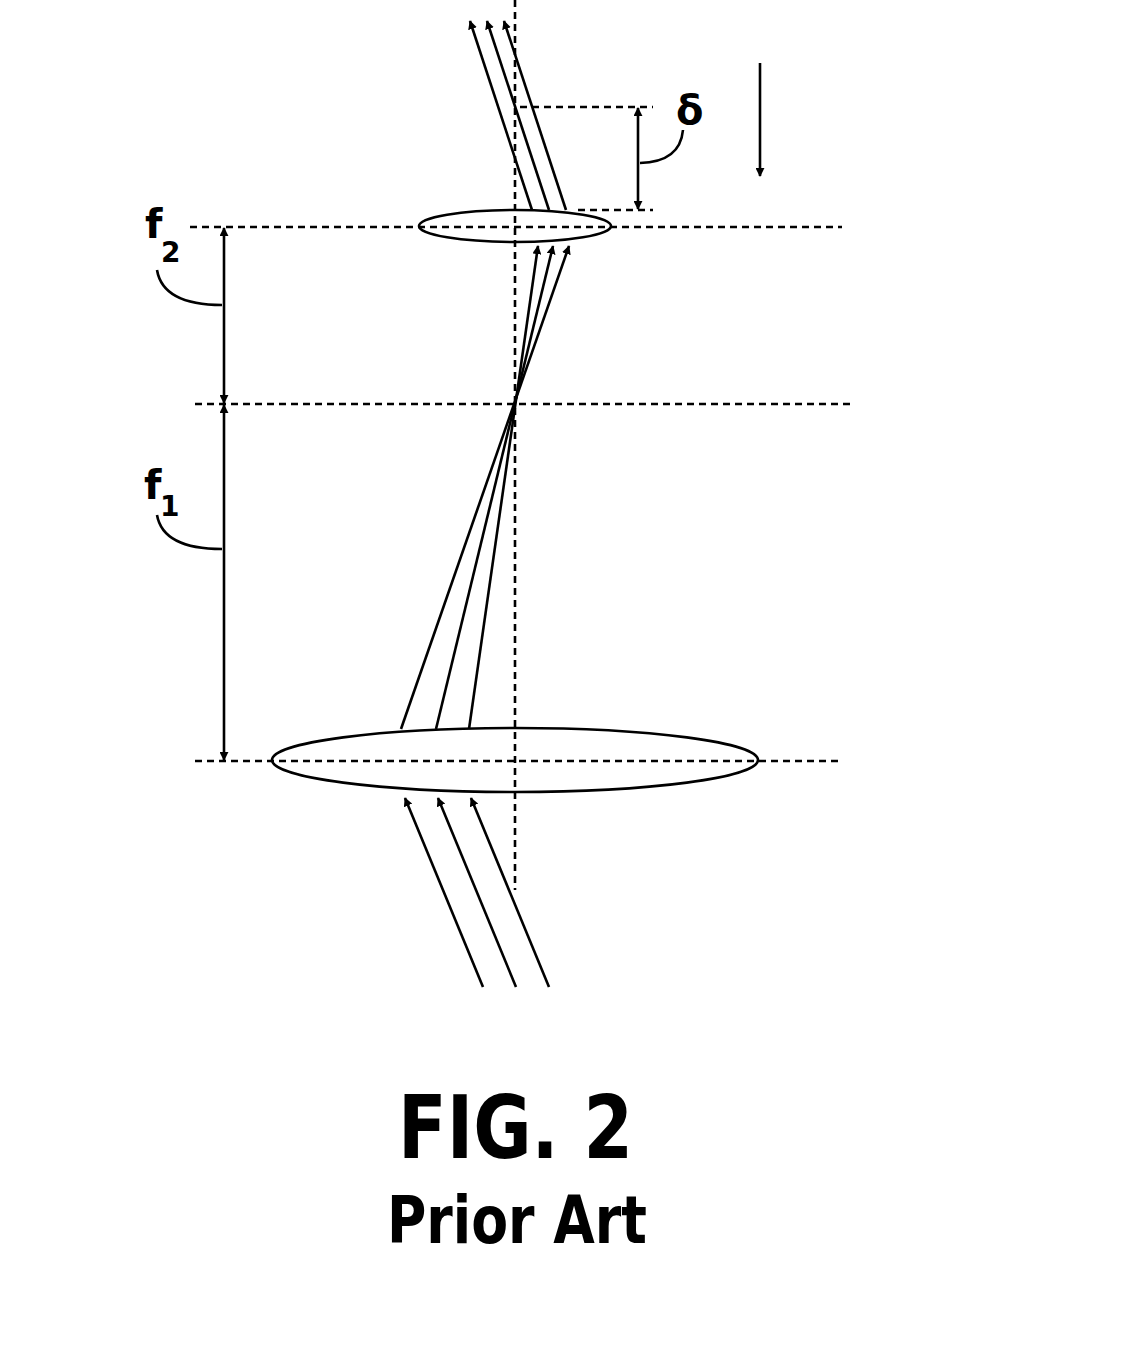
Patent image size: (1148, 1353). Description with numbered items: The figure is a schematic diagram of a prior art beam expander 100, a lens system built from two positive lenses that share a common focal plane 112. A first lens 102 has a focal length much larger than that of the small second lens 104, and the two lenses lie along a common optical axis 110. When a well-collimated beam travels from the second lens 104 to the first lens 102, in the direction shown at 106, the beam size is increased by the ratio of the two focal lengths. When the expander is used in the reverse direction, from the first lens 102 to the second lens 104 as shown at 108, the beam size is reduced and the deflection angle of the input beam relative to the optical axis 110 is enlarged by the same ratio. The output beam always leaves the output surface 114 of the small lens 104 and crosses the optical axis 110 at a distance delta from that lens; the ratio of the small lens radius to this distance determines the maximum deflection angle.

The prior art beam steering optical system 100 is at (278, 80).
The first lens 102 is at (732, 781).
The second lens 104 is at (450, 247).
The direction from second lens to first lens 106 is at (760, 115).
The direction from first lens to second lens 108 is at (473, 890).
The optical axis 110 is at (515, 597).
The common focal plane 112 is at (710, 406).
The output surface 114 is at (467, 210).